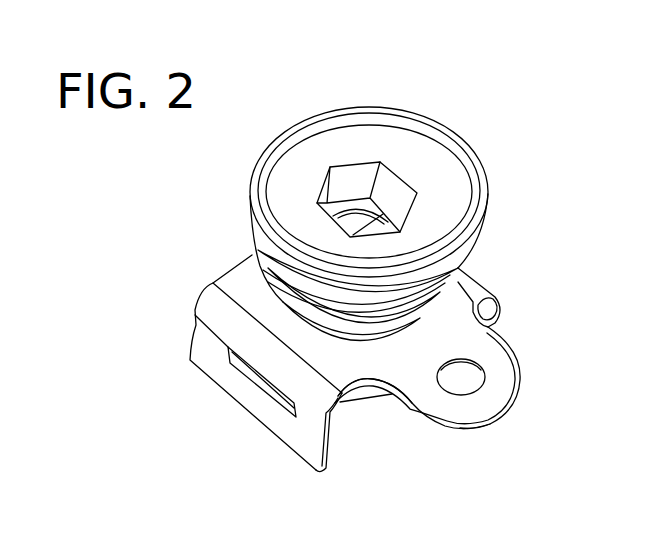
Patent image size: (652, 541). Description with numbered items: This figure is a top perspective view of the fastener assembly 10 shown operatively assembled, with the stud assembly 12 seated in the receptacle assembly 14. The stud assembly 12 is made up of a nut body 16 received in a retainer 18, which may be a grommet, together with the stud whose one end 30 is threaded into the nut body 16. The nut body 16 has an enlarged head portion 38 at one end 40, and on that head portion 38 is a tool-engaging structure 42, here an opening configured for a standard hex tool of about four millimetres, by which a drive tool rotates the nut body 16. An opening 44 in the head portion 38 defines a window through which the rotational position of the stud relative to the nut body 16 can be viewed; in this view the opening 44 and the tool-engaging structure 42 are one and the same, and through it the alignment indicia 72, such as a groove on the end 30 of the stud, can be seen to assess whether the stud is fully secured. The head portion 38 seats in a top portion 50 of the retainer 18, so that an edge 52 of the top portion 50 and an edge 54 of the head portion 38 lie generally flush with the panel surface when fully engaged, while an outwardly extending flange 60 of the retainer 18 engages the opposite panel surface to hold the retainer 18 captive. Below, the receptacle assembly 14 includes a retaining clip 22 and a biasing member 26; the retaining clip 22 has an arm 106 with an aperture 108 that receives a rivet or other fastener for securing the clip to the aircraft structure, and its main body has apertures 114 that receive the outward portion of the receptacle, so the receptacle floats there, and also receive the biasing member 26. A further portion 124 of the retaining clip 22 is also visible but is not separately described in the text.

The fastener assembly 10 is at (545, 192).
The stud assembly 12 is at (499, 182).
The receptacle assembly 14 is at (510, 322).
The nut body 16 is at (412, 156).
The retainer 18 is at (251, 163).
The retaining clip 22 is at (268, 439).
The biasing member 26 is at (356, 412).
The end of the stud 30 is at (343, 207).
The head portion 38 is at (291, 198).
The end of the nut body 40 is at (276, 160).
The tool-engaging structure 42 is at (385, 156).
The opening 44 is at (399, 187).
The top portion of the retainer 50 is at (480, 232).
The edge of the top portion 52 is at (312, 120).
The edge of the head portion 54 is at (270, 203).
The outwardly extending flange 60 is at (437, 304).
The alignment indicia 72 is at (364, 216).
The arm 106 is at (463, 411).
The aperture 108 is at (459, 377).
The apertures 114 is at (257, 388).
The tab 124 is at (196, 372).